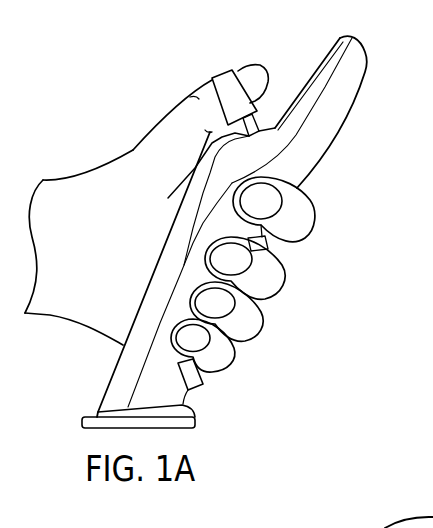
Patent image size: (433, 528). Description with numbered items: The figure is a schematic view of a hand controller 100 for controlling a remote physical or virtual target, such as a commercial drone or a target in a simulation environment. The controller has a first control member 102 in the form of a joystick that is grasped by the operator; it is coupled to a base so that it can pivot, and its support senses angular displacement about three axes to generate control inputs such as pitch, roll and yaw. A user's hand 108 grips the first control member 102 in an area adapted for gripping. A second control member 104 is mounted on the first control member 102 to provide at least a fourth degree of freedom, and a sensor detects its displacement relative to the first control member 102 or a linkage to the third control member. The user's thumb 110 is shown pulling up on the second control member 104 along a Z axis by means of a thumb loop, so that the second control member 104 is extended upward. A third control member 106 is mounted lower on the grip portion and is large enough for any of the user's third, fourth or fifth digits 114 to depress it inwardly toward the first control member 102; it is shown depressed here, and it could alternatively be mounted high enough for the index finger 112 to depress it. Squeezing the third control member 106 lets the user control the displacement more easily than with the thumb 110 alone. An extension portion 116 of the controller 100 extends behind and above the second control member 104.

The controller 100 is at (247, 395).
The first control member 102 is at (150, 313).
The second control member 104 is at (223, 80).
The third control member 106 is at (200, 394).
The user's hand 108 is at (126, 134).
The user's thumb 110 is at (262, 67).
The index finger 112 is at (305, 215).
The third, fourth or fifth digits 114 is at (300, 262).
The extension portion 116 is at (356, 95).